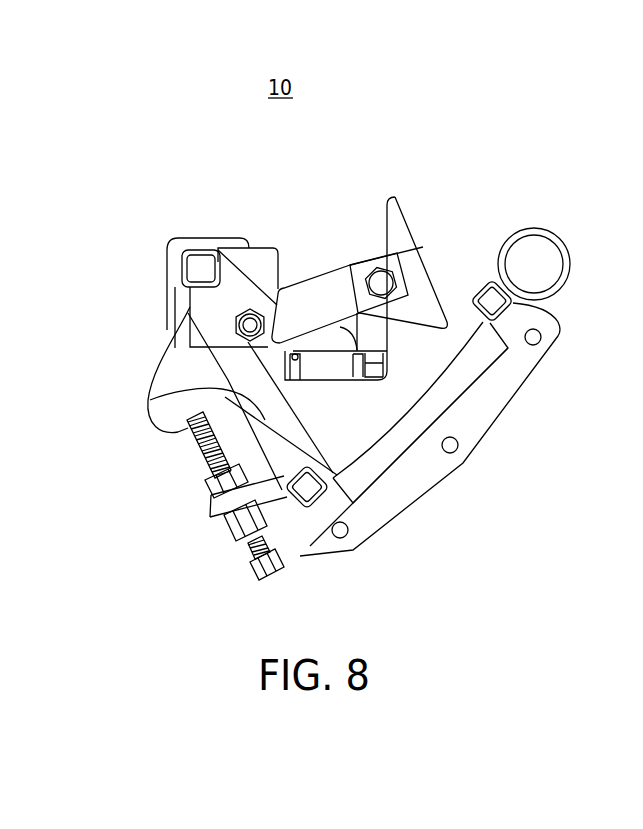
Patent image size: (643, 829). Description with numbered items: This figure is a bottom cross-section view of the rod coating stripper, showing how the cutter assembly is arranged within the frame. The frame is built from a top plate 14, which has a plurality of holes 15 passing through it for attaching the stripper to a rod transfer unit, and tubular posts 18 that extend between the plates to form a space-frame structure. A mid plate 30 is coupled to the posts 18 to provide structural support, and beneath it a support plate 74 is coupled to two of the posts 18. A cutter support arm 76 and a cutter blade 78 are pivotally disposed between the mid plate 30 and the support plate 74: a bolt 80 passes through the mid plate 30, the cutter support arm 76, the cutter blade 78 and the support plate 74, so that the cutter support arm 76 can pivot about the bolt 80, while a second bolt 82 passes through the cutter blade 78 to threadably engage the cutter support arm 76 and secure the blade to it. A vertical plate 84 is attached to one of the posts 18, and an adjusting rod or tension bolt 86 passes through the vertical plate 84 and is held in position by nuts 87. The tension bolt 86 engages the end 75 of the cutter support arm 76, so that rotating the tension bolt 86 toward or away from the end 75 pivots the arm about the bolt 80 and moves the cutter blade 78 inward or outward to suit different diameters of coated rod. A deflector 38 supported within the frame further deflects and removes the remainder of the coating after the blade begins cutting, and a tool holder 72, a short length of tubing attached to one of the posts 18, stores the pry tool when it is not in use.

The top plate 14 is at (510, 383).
The holes 15 is at (540, 340).
The posts 18 is at (198, 252).
The mid plate 30 is at (252, 257).
The deflector 38 is at (189, 354).
The tool holder 72 is at (533, 230).
The support plate 74 is at (150, 400).
The end 75 is at (178, 432).
The cutter support arm 76 is at (425, 262).
The cutter blade 78 is at (322, 297).
The bolt 80 is at (253, 325).
The bolt 82 is at (378, 282).
The vertical plate 84 is at (228, 522).
The tension bolt 86 is at (210, 477).
The nuts 87 is at (211, 496).